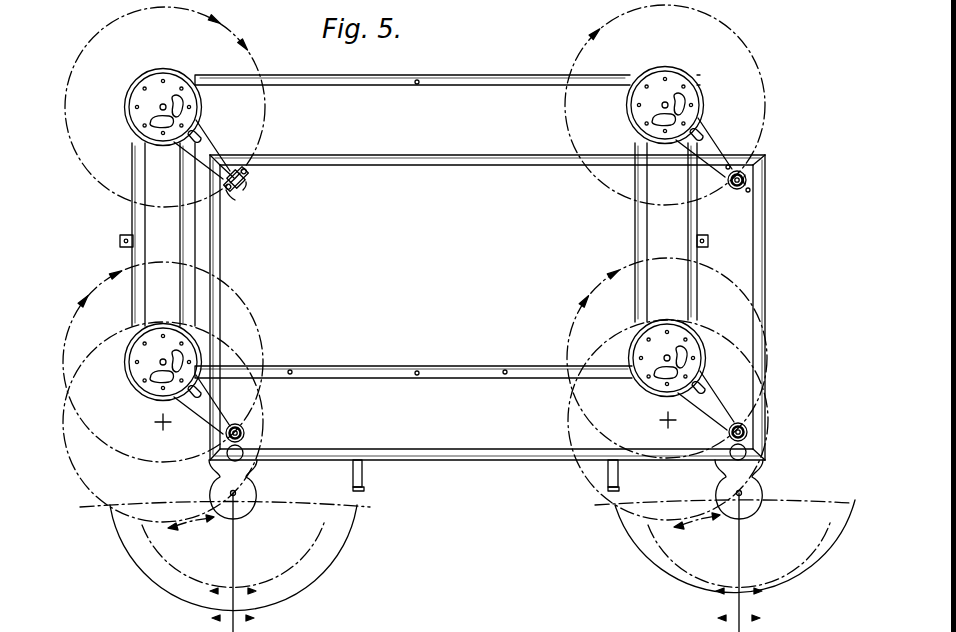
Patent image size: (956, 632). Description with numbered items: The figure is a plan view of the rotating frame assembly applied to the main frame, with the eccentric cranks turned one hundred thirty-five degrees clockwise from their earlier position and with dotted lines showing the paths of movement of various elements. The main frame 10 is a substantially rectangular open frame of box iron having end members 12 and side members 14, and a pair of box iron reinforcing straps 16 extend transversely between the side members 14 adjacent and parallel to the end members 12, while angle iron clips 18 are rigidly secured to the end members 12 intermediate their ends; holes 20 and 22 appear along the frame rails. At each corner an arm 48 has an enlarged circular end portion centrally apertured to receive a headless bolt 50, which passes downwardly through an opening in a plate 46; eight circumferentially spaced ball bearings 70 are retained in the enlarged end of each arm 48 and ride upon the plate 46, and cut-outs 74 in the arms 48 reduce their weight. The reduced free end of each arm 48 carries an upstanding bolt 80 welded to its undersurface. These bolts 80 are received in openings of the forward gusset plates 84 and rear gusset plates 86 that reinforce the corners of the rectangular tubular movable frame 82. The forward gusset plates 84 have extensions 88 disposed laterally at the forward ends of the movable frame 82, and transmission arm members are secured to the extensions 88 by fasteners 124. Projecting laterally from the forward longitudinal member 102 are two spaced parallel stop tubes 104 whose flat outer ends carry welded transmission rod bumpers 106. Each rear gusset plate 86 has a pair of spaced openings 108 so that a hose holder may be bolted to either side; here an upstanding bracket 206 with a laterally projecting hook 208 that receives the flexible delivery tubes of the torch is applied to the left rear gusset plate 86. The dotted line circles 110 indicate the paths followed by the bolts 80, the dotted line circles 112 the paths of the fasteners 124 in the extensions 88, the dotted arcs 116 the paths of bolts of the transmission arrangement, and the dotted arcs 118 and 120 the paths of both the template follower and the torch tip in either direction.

The frame 10 is at (447, 66).
The end member 12 is at (145, 190).
The side member 14 is at (356, 77).
The reinforcing strap 16 is at (182, 237).
The angle iron clip 18 is at (119, 240).
The hole 20 is at (415, 85).
The cross rail 22 is at (291, 370).
The plate 46 is at (465, 562).
The arm 48 is at (413, 234).
The headless bolt 50 is at (164, 104).
The ball bearing 70 is at (139, 113).
The cut-out 74 is at (206, 140).
The upstanding bolt 80 is at (727, 180).
The movable frame 82 is at (423, 158).
The forward gusset plate 84 is at (250, 444).
The rear gusset plate 86 is at (252, 178).
The extension 88 is at (256, 491).
The forward longitudinal member 102 is at (431, 450).
The stop tube 104 is at (363, 478).
The transmission rod bumper 106 is at (362, 489).
The opening 108 is at (731, 165).
The dotted line circle 110 is at (266, 130).
The dotted line circle 112 is at (92, 486).
The dotted line arc 116 is at (281, 586).
The dotted line arc 118 is at (781, 610).
The dotted line arc 120 is at (160, 600).
The fastener 124 is at (236, 497).
The bracket 206 is at (233, 203).
The hook 208 is at (244, 192).